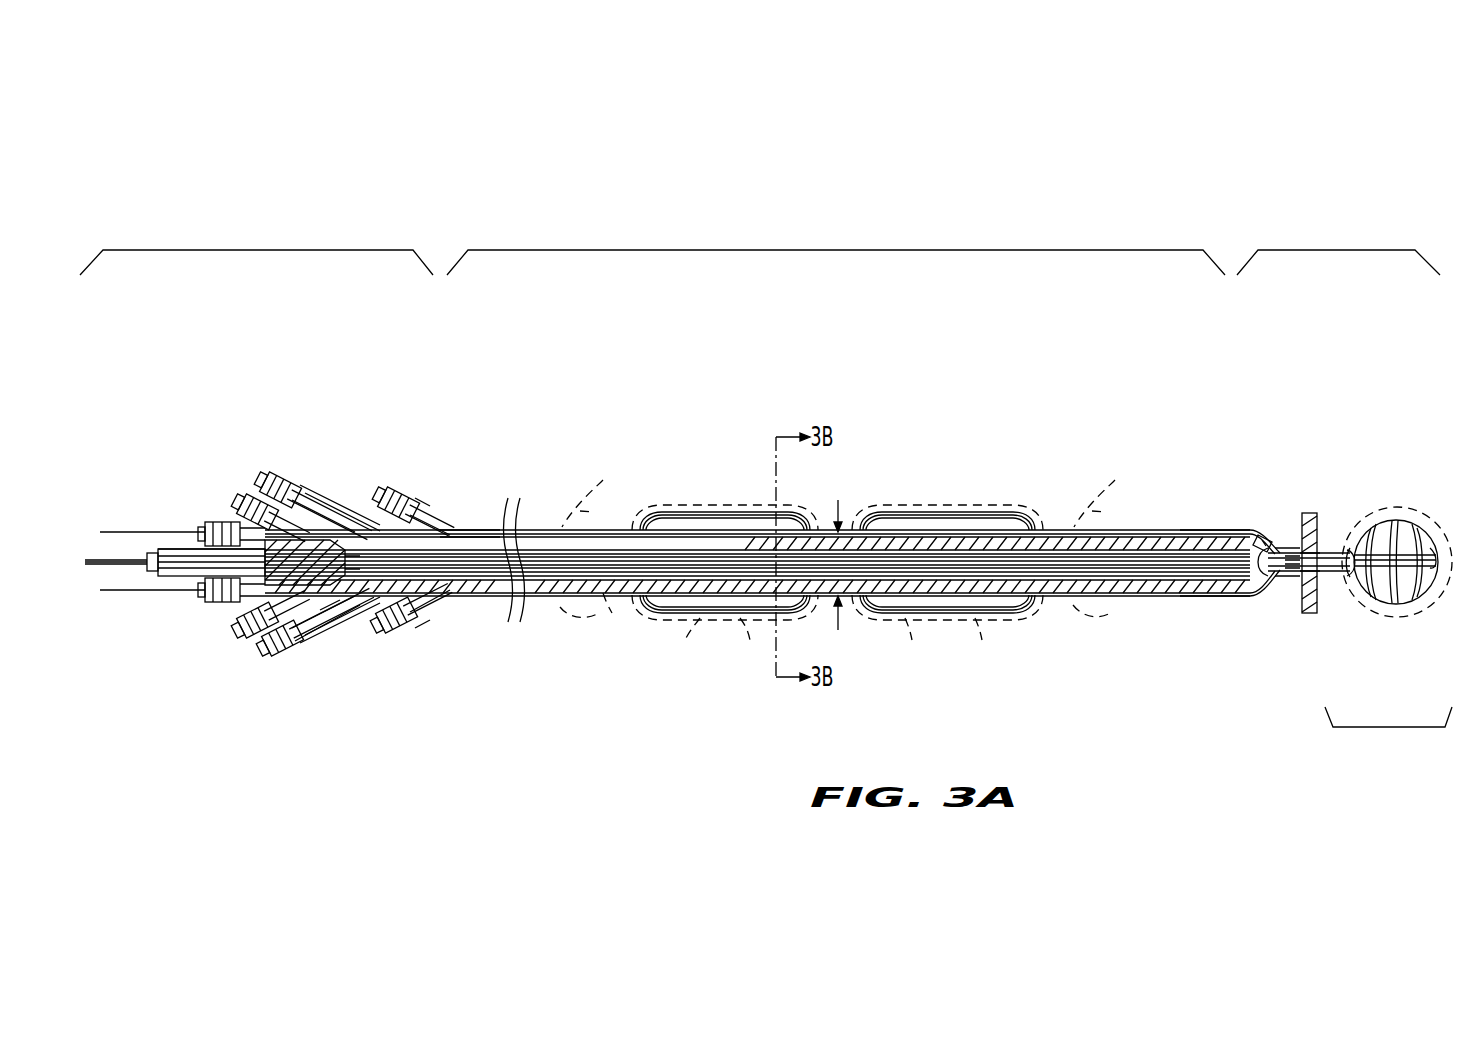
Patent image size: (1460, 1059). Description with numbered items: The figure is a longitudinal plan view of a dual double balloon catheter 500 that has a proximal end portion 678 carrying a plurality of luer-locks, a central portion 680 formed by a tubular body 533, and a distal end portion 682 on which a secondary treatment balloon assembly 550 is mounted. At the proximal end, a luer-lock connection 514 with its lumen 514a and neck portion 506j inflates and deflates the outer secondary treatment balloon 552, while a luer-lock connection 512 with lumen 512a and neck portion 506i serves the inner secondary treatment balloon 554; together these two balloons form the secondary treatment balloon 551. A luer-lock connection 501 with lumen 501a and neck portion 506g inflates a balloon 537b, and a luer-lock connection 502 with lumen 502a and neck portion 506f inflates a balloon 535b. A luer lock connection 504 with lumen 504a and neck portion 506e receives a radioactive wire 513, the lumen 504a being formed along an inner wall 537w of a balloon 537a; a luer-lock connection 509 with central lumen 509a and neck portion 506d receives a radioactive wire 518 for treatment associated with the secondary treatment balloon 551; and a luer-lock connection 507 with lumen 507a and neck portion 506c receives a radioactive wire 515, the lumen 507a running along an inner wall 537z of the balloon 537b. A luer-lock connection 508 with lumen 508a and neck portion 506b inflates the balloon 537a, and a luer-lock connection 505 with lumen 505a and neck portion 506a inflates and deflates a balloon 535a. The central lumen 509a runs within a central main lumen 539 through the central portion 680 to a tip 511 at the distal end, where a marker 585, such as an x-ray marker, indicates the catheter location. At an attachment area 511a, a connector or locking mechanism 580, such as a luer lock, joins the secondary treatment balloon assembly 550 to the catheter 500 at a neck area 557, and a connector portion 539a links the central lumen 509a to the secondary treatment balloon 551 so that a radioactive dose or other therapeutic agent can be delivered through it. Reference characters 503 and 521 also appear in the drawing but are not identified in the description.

The dual double balloon catheter 500 is at (1062, 119).
The proximal end portion 678 is at (268, 250).
The central portion 680 is at (793, 250).
The distal end portion 682 is at (1296, 250).
The secondary treatment balloon assembly 550 is at (1370, 727).
The outer sleeve 503 is at (1028, 530).
The radioactive wire 515 is at (110, 532).
The balloon 535a is at (603, 480).
The balloon 535b is at (1115, 480).
The dimension 521 is at (838, 545).
The tip 511 is at (1266, 582).
The attachment area 511a is at (1296, 582).
The connector or locking mechanism 580 is at (1310, 513).
The marker 585 is at (1310, 512).
The central main lumen 539 is at (1248, 535).
The tubular body 533 is at (1197, 530).
The secondary treatment balloon 551 is at (1433, 482).
The outer secondary treatment balloon 552 is at (1402, 618).
The inner secondary treatment balloon 554 is at (1408, 612).
The neck area 557 is at (1350, 518).
The connector portion 539a is at (1342, 524).
The lumen 512a is at (1326, 575).
The lumen 514a is at (1342, 580).
The radioactive wire 518 is at (122, 532).
The radioactive wire 513 is at (103, 585).
The luer-lock connection 509 is at (152, 532).
The central lumen 509a is at (133, 585).
The luer-lock connection 501 is at (288, 598).
The lumen 501a is at (270, 645).
The lumen 507a is at (197, 532).
The luer-lock connection 507 is at (222, 532).
The neck portion 506c is at (235, 528).
The lumen 508a is at (260, 480).
The luer-lock connection 508 is at (273, 477).
The lumen 505a is at (290, 478).
The luer-lock connection 505 is at (318, 527).
The neck portion 506b is at (376, 486).
The neck portion 506a is at (380, 500).
The luer-lock connection 512 is at (405, 502).
The neck portion 506i is at (430, 508).
The neck portion 506d is at (172, 582).
The neck portion 506e is at (245, 635).
The lumen 504a is at (200, 592).
The luer lock connection 504 is at (210, 598).
The lumen 502a is at (250, 650).
The luer-lock connection 502 is at (228, 592).
The neck portion 506f is at (330, 607).
The neck portion 506g is at (380, 622).
The luer-lock connection 514 is at (395, 620).
The neck portion 506j is at (448, 600).
The balloon 537a is at (715, 618).
The inner wall 537w is at (752, 612).
The balloon 537b is at (934, 616).
The inner wall 537z is at (982, 618).